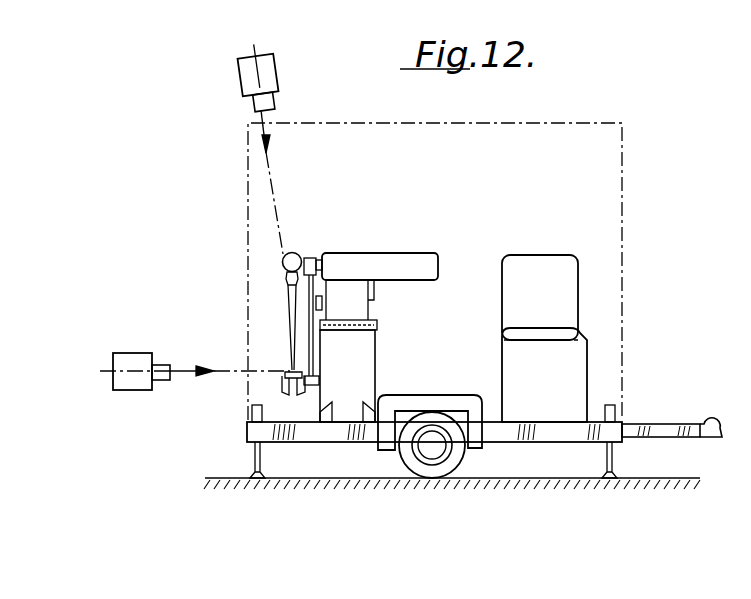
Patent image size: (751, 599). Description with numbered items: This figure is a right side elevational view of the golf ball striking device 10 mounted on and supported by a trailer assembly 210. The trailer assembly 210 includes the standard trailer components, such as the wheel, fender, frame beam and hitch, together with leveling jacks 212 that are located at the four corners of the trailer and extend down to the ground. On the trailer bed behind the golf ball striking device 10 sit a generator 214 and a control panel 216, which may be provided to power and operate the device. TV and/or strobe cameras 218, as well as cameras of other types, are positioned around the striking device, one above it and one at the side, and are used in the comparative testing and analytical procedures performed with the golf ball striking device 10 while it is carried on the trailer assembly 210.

The golf ball striking device 10 is at (386, 248).
The trailer assembly 210 is at (640, 398).
The leveling jacks 212 is at (256, 456).
The generator 214 is at (567, 352).
The control panel 216 is at (567, 265).
The cameras 218 is at (243, 72).